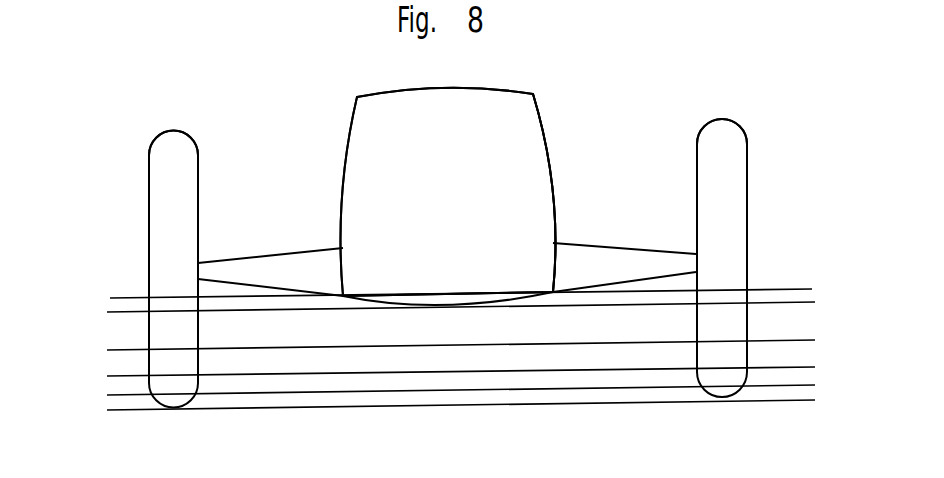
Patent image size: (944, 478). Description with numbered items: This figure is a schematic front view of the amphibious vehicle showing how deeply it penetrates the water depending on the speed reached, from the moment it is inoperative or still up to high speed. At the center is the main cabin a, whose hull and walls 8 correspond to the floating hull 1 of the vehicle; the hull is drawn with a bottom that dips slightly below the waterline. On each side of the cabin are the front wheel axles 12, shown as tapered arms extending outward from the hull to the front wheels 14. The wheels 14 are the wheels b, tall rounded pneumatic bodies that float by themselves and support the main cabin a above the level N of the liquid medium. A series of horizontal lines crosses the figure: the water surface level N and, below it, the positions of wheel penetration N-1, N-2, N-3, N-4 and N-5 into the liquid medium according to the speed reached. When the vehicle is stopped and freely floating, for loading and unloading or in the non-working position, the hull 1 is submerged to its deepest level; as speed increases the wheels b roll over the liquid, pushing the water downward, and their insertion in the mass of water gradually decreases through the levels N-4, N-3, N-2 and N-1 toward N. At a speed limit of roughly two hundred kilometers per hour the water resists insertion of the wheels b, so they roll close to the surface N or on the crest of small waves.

The floating hull of the main cabin 1 is at (345, 110).
The hull and walls of main cabin 8 is at (345, 155).
The front wheel axles 12 is at (289, 261).
The front wheels 14 is at (162, 173).
The main cabin a is at (548, 101).
The wheels b is at (150, 128).
The water or liquid medium surface level N is at (110, 297).
The position of wheel penetration N-1 is at (457, 305).
The position of wheel penetration N-2 is at (457, 348).
The position of wheel penetration N-3 is at (457, 370).
The position of wheel penetration N-4 is at (457, 389).
The reference line N-5 is at (457, 410).